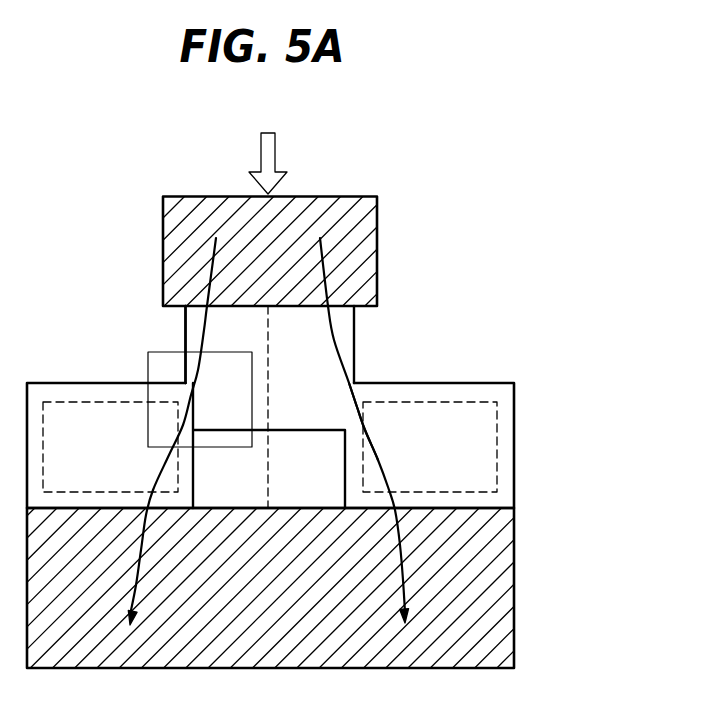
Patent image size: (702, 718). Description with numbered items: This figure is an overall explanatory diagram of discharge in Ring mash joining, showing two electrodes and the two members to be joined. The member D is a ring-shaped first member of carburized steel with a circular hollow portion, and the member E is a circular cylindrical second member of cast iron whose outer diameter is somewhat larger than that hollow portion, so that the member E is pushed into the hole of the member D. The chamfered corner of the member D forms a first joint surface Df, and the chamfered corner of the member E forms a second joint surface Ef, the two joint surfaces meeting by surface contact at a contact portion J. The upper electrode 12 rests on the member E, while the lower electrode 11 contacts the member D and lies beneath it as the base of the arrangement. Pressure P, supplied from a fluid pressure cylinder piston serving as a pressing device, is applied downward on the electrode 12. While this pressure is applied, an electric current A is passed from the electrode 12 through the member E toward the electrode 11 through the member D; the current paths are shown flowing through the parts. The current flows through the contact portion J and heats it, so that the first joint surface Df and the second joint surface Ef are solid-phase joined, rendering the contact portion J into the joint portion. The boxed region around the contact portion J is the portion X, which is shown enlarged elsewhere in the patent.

The electrode 12 is at (377, 237).
The electrode 11 is at (513, 612).
The pressure P is at (268, 145).
The electric current A is at (205, 326).
The contact portion J is at (166, 363).
The portion X is at (148, 367).
The member E is at (355, 352).
The member D is at (515, 462).
The second joint surface Ef is at (192, 410).
The first joint surface Df is at (346, 416).